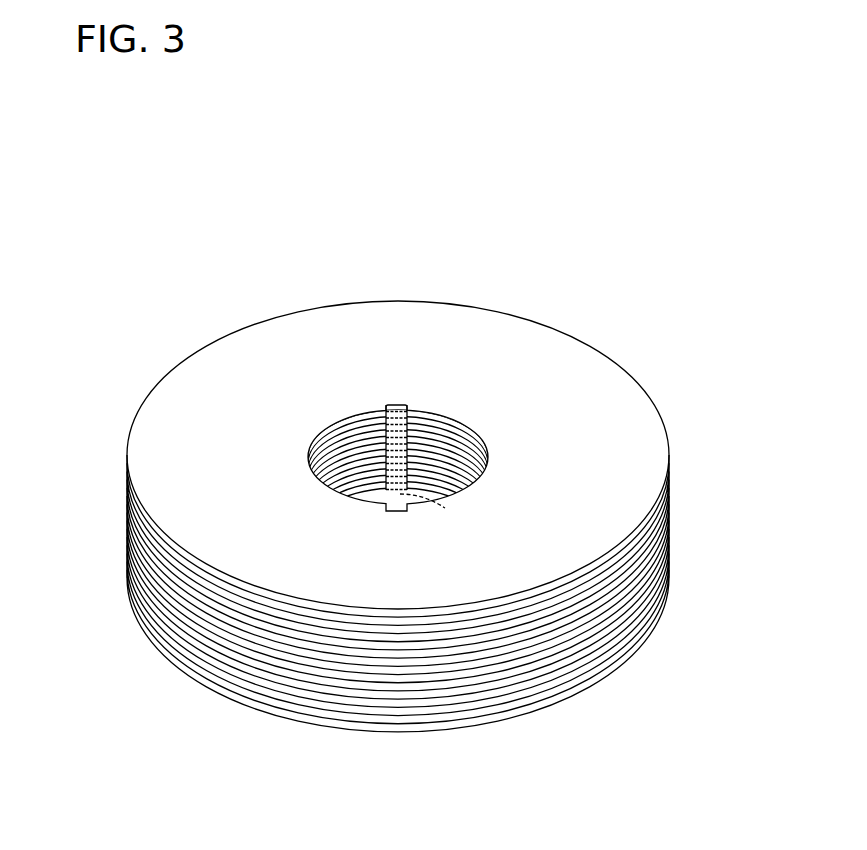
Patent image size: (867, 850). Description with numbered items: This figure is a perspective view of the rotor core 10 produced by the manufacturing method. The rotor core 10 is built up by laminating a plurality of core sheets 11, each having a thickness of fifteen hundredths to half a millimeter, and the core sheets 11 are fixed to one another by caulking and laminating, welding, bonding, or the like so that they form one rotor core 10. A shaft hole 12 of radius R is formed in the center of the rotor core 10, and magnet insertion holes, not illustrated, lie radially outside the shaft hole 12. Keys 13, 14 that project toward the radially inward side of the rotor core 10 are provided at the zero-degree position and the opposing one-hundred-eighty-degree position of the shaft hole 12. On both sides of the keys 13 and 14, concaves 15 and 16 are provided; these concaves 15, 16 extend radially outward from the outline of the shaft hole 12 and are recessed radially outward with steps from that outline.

The rotor core 10 is at (572, 324).
The core sheet 11 is at (622, 428).
The shaft hole 12 is at (448, 433).
The key 13 is at (340, 417).
The key 14 is at (445, 508).
The concave 15 is at (373, 407).
The concave 16 is at (420, 405).